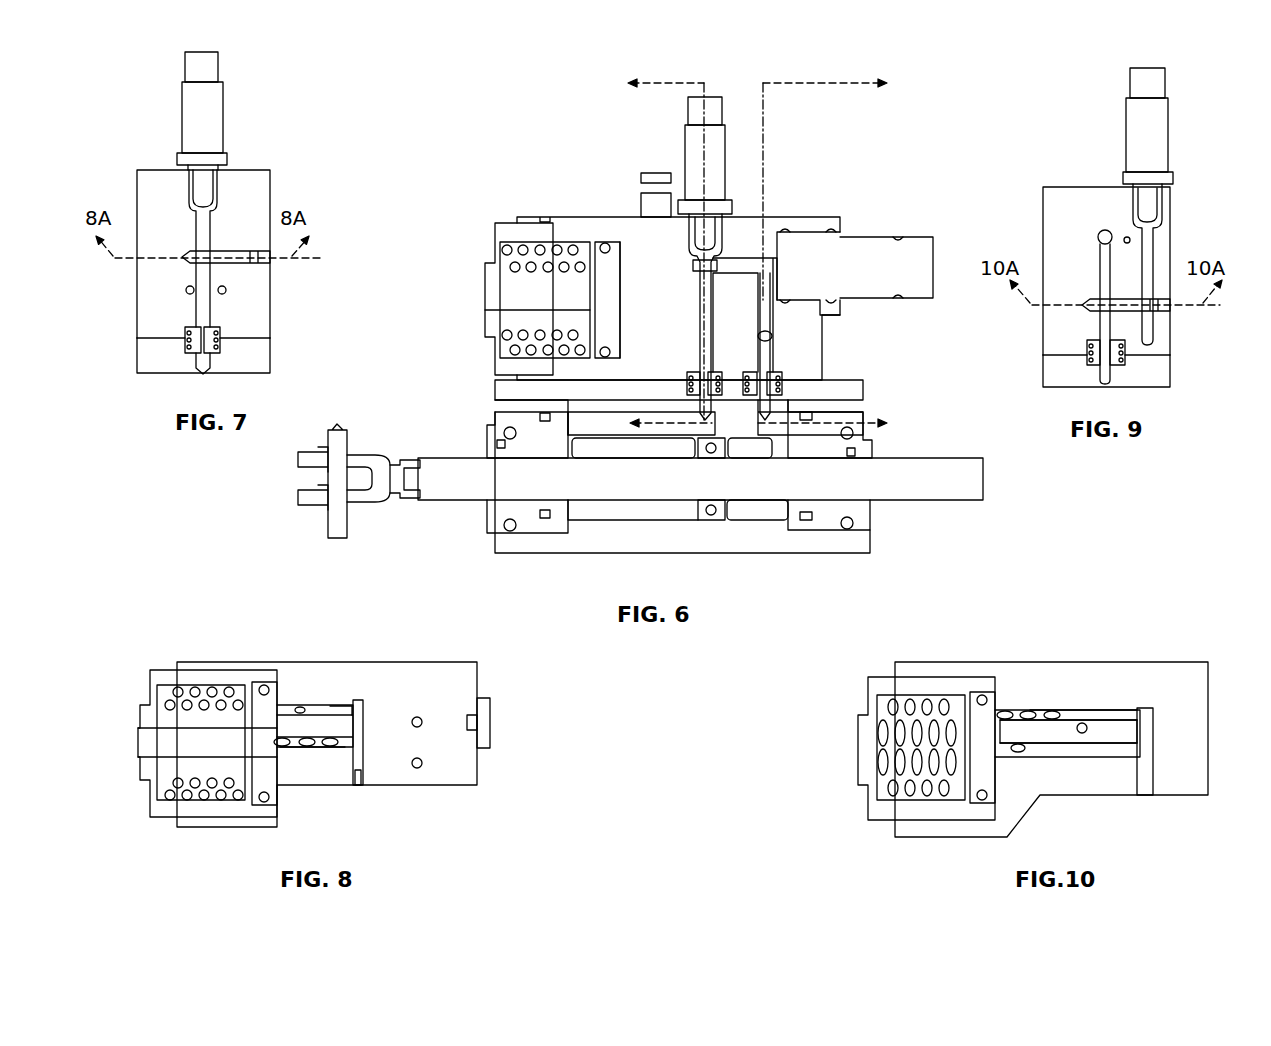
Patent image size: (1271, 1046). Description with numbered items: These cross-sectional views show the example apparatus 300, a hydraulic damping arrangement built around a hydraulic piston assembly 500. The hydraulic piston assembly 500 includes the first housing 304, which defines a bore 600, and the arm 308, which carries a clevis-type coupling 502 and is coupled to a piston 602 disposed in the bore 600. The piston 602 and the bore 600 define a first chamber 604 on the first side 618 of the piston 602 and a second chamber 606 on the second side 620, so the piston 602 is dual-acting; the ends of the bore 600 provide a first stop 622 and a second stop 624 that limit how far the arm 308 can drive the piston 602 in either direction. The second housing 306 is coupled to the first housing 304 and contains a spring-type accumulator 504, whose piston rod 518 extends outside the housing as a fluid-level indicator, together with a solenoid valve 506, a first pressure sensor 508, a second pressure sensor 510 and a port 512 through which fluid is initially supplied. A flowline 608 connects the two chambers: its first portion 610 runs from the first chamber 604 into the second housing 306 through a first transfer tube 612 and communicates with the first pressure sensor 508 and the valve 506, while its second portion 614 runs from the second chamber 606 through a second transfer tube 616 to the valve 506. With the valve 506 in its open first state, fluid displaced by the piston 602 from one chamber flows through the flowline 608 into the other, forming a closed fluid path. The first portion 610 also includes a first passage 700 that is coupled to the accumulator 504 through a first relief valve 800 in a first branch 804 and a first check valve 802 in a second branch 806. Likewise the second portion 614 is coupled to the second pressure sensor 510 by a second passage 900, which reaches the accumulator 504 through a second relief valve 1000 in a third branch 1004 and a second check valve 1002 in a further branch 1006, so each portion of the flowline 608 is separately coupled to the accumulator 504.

In FIG. 6, the apparatus 300 is at (558, 111).
In FIG. 7, the first housing 304 is at (170, 363).
In FIG. 9, the first housing 304 is at (1055, 381).
In FIG. 6, the first housing 304 is at (835, 545).
In FIG. 7, the second housing 306 is at (250, 172).
In FIG. 9, the second housing 306 is at (1055, 200).
In FIG. 6, the second housing 306 is at (779, 217).
In FIG. 8, the second housing 306 is at (468, 687).
In FIG. 10, the second housing 306 is at (968, 676).
In FIG. 6, the arm 308 is at (943, 490).
In FIG. 6, the hydraulic piston assembly 500 is at (660, 505).
In FIG. 6, the coupling 502 is at (336, 540).
In FIG. 6, the accumulator 504 is at (513, 293).
In FIG. 8, the accumulator 504 is at (186, 720).
In FIG. 10, the accumulator 504 is at (879, 702).
In FIG. 6, the valve 506 is at (870, 240).
In FIG. 6, the first pressure sensor 508 is at (690, 143).
In FIG. 7, the second pressure sensor 510 is at (191, 107).
In FIG. 9, the second pressure sensor 510 is at (1135, 125).
In FIG. 6, the port 512 is at (645, 205).
In FIG. 8, the piston rod 518 is at (147, 738).
In FIG. 6, the bore 600 is at (607, 522).
In FIG. 6, the piston 602 is at (703, 482).
In FIG. 6, the first chamber 604 is at (633, 448).
In FIG. 6, the second chamber 606 is at (750, 448).
In FIG. 7, the flowline 608 is at (197, 319).
In FIG. 9, the flowline 608 is at (1097, 346).
In FIG. 6, the flowline 608 is at (615, 410).
In FIG. 7, the first portion of the flowline 610 is at (205, 302).
In FIG. 6, the first portion of the flowline 610 is at (698, 345).
In FIG. 7, the first transfer tube 612 is at (222, 340).
In FIG. 6, the first transfer tube 612 is at (688, 383).
In FIG. 9, the second portion of the flowline 614 is at (1100, 262).
In FIG. 6, the second portion of the flowline 614 is at (765, 313).
In FIG. 9, the second transfer tube 616 is at (1116, 363).
In FIG. 6, the second transfer tube 616 is at (768, 373).
In FIG. 6, the first side of the piston 618 is at (696, 508).
In FIG. 6, the second side of the piston 620 is at (732, 505).
In FIG. 6, the first stop 622 is at (580, 517).
In FIG. 6, the second stop 624 is at (789, 505).
In FIG. 7, the first passage 700 is at (232, 263).
In FIG. 8, the first passage 700 is at (366, 757).
In FIG. 8, the first relief valve 800 is at (294, 750).
In FIG. 8, the first check valve 802 is at (301, 707).
In FIG. 8, the first branch 804 is at (346, 748).
In FIG. 8, the second branch 806 is at (338, 698).
In FIG. 9, the second passage 900 is at (1131, 300).
In FIG. 10, the second passage 900 is at (1150, 770).
In FIG. 10, the second relief valve 1000 is at (1030, 712).
In FIG. 10, the second check valve 1002 is at (1030, 755).
In FIG. 10, the third branch 1004 is at (1108, 757).
In FIG. 10, the pin bore 1006 is at (1110, 710).